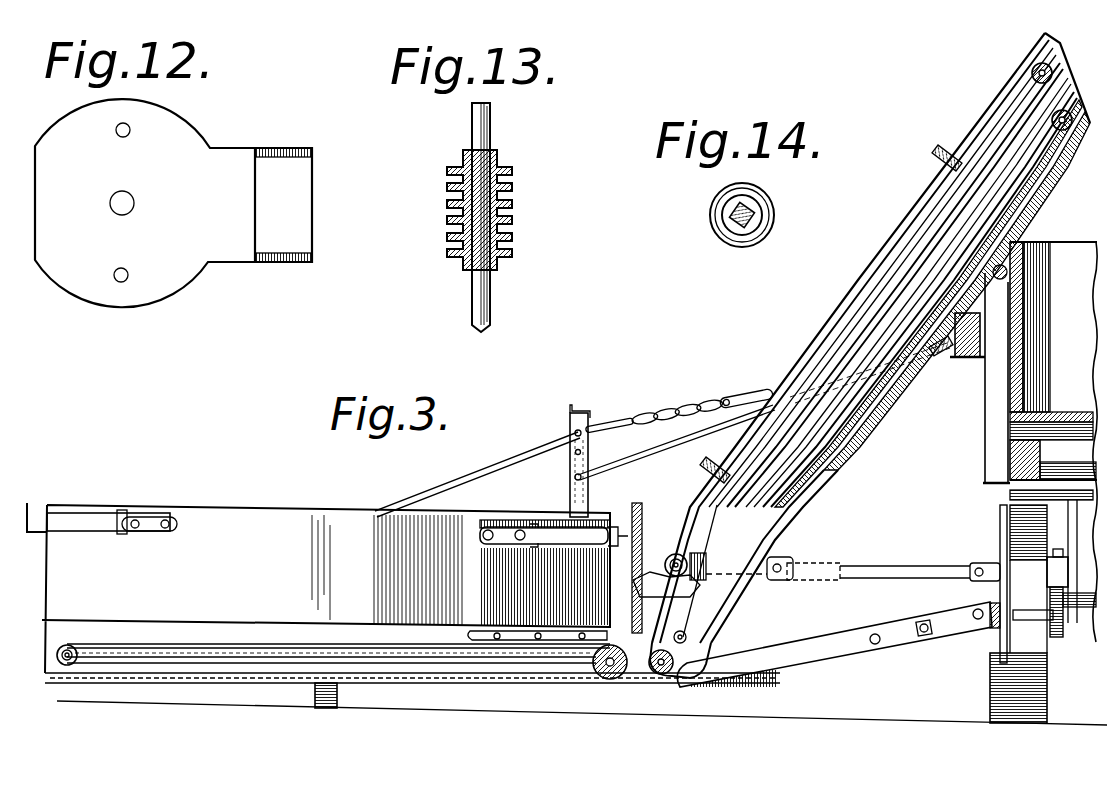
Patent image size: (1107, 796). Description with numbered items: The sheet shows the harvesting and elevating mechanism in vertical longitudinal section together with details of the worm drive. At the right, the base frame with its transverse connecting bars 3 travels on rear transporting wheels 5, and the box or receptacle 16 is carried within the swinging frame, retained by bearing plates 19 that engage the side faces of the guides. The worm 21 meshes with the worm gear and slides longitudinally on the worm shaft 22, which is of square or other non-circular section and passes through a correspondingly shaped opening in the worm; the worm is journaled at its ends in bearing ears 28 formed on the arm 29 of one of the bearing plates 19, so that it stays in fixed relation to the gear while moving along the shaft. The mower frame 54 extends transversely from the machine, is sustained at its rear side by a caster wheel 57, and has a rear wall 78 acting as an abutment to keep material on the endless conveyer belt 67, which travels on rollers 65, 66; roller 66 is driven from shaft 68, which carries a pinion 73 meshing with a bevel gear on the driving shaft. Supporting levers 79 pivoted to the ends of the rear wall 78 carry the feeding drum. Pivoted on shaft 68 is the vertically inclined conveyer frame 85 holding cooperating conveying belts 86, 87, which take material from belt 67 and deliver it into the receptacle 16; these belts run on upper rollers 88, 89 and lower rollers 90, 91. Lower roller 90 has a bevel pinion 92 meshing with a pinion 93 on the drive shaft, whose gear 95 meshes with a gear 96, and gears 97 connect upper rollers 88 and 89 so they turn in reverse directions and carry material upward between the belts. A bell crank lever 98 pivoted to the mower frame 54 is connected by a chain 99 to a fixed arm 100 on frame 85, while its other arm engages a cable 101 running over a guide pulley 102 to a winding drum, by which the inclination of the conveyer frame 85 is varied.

In FIG. 12, the bearing plate 19 is at (145, 203).
In FIG. 12, the bearing ears 28 is at (284, 151).
In FIG. 12, the arm 29 is at (306, 209).
In FIG. 13, the worm 21 is at (512, 201).
In FIG. 14, the worm 21 is at (712, 215).
In FIG. 13, the worm shaft 22 is at (484, 129).
In FIG. 14, the worm shaft 22 is at (750, 213).
In FIG. 3, the transverse connecting bars 3 is at (1053, 517).
In FIG. 3, the rear transporting wheels 5 is at (1033, 673).
In FIG. 3, the box or receptacle 16 is at (1053, 442).
In FIG. 3, the mower frame 54 is at (437, 570).
In FIG. 3, the caster wheel 57 is at (334, 706).
In FIG. 3, the roller 65 is at (70, 647).
In FIG. 3, the roller 66 is at (600, 684).
In FIG. 3, the endless conveyer belt 67 is at (240, 645).
In FIG. 3, the shaft 68 is at (610, 679).
In FIG. 3, the pinion 73 is at (1032, 617).
In FIG. 3, the rear wall 78 is at (222, 512).
In FIG. 3, the supporting levers 79 is at (28, 501).
In FIG. 3, the conveyer frame 85 is at (866, 266).
In FIG. 3, the conveying belt 86 is at (918, 202).
In FIG. 3, the conveying belt 87 is at (810, 500).
In FIG. 3, the upper roller 88 is at (1034, 68).
In FIG. 3, the upper roller 89 is at (1072, 118).
In FIG. 3, the lower roller 90 is at (676, 556).
In FIG. 3, the lower roller 91 is at (662, 690).
In FIG. 3, the bevel pinion 92 is at (682, 540).
In FIG. 3, the pinion 93 is at (666, 595).
In FIG. 3, the gear 95 is at (1047, 560).
In FIG. 3, the gear 96 is at (1058, 633).
In FIG. 3, the gears 97 is at (862, 567).
In FIG. 3, the bell crank lever 98 is at (604, 425).
In FIG. 3, the chain 99 is at (687, 404).
In FIG. 3, the fixed arm 100 is at (752, 393).
In FIG. 3, the cable 101 is at (683, 453).
In FIG. 3, the guide pulley 102 is at (936, 350).